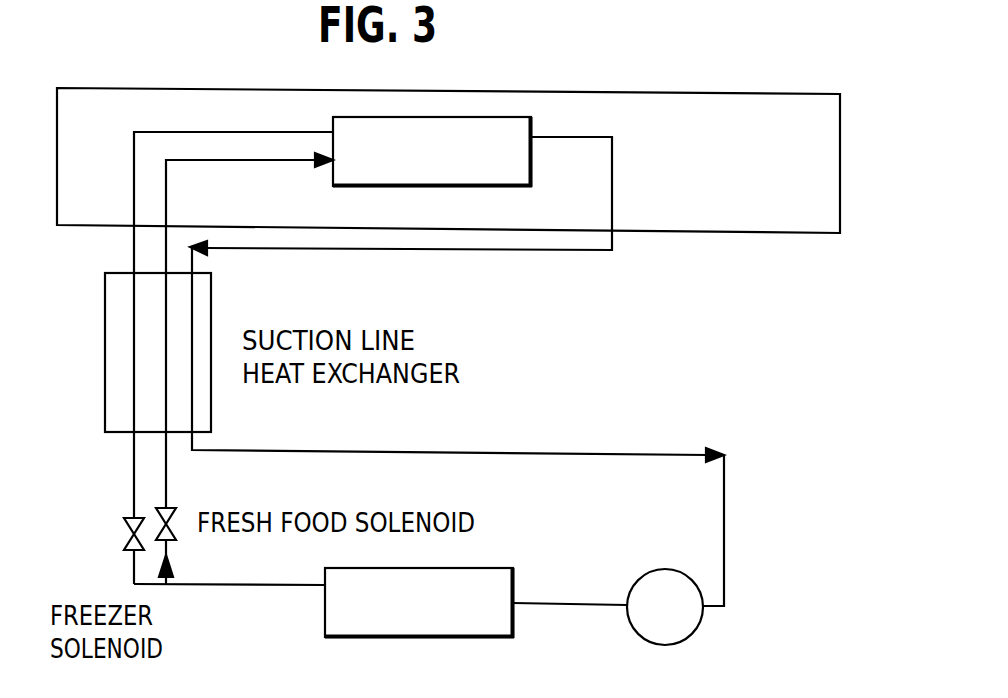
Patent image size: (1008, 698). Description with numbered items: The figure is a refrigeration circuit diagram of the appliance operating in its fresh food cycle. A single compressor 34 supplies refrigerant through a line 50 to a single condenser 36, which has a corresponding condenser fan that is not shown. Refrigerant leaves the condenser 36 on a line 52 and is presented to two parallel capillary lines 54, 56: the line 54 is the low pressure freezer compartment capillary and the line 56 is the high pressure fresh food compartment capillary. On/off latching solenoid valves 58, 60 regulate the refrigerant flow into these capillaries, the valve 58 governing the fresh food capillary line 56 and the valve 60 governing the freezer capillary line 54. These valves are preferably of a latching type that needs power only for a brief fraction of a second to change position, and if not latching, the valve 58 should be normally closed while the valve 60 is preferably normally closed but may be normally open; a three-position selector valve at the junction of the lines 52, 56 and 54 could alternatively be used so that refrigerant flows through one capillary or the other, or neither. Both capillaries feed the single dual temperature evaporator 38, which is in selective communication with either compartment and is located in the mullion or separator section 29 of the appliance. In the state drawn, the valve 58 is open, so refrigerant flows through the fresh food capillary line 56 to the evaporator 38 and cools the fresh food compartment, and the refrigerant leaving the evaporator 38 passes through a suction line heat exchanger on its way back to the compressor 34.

The mullion (separator) section 29 is at (57, 151).
The evaporator 38 is at (522, 133).
The low pressure capillary line 54 is at (133, 470).
The high pressure capillary line 56 is at (166, 478).
The solenoid valve 60 is at (123, 533).
The solenoid valve 58 is at (169, 528).
The line 52 is at (233, 587).
The condenser 36 is at (470, 632).
The line 50 is at (581, 603).
The compressor 34 is at (692, 627).